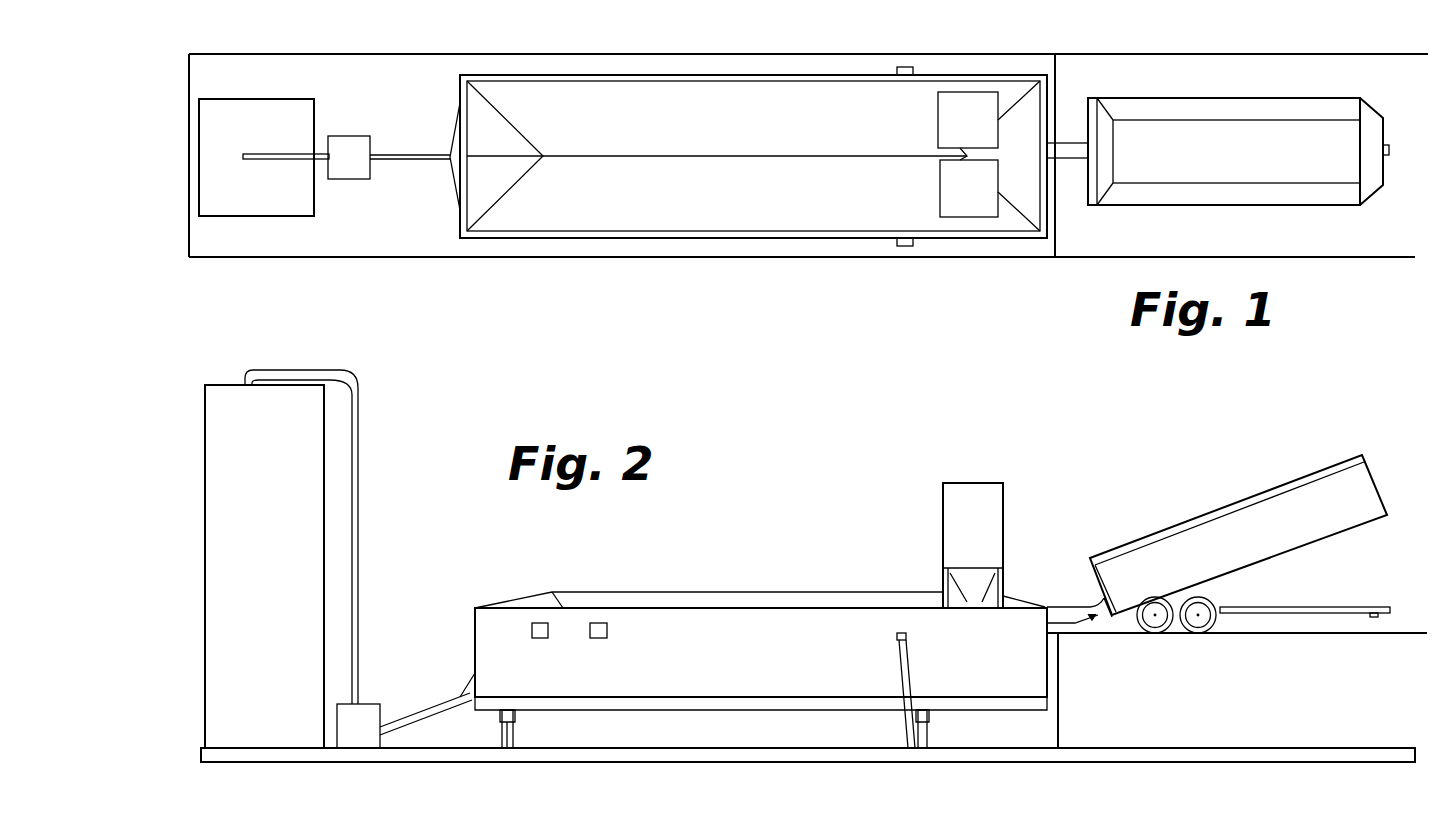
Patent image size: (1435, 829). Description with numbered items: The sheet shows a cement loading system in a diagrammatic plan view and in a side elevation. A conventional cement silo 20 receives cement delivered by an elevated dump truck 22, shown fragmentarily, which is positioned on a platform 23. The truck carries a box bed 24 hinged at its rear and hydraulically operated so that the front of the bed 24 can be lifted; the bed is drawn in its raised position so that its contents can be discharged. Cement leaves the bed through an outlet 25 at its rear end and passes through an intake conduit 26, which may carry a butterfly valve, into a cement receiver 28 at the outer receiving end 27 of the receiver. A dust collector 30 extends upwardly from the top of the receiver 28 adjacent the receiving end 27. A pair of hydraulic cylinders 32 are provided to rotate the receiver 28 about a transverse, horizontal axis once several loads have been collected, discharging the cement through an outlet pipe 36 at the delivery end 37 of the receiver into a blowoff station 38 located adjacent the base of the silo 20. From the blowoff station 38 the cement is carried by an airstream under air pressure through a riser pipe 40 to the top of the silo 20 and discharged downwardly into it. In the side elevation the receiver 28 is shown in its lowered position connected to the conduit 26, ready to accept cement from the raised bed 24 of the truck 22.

In FIG. 1, the cement silo 20 is at (205, 99).
In FIG. 2, the cement silo 20 is at (222, 385).
In FIG. 1, the dump truck 22 is at (1318, 85).
In FIG. 2, the dump truck 22 is at (1330, 586).
In FIG. 1, the platform 23 is at (1270, 258).
In FIG. 2, the platform 23 is at (1345, 634).
In FIG. 1, the box bed 24 is at (1192, 98).
In FIG. 2, the box bed 24 is at (1204, 513).
In FIG. 2, the outlet 25 is at (1112, 620).
In FIG. 1, the intake conduit 26 is at (1072, 160).
In FIG. 2, the intake conduit 26 is at (1077, 607).
In FIG. 1, the outer receiving end 27 is at (1057, 86).
In FIG. 2, the outer receiving end 27 is at (1047, 672).
In FIG. 1, the cement receiver 28 is at (540, 240).
In FIG. 2, the cement receiver 28 is at (665, 592).
In FIG. 1, the dust collector 30 is at (965, 92).
In FIG. 2, the dust collector 30 is at (943, 512).
In FIG. 1, the hydraulic cylinders 32 is at (905, 67).
In FIG. 2, the hydraulic cylinders 32 is at (898, 665).
In FIG. 1, the outlet pipe 36 is at (448, 152).
In FIG. 2, the outlet pipe 36 is at (437, 698).
In FIG. 2, the delivery end 37 is at (475, 626).
In FIG. 1, the blowoff station 38 is at (352, 180).
In FIG. 2, the blowoff station 38 is at (357, 740).
In FIG. 1, the riser pipe 40 is at (252, 155).
In FIG. 2, the riser pipe 40 is at (358, 456).